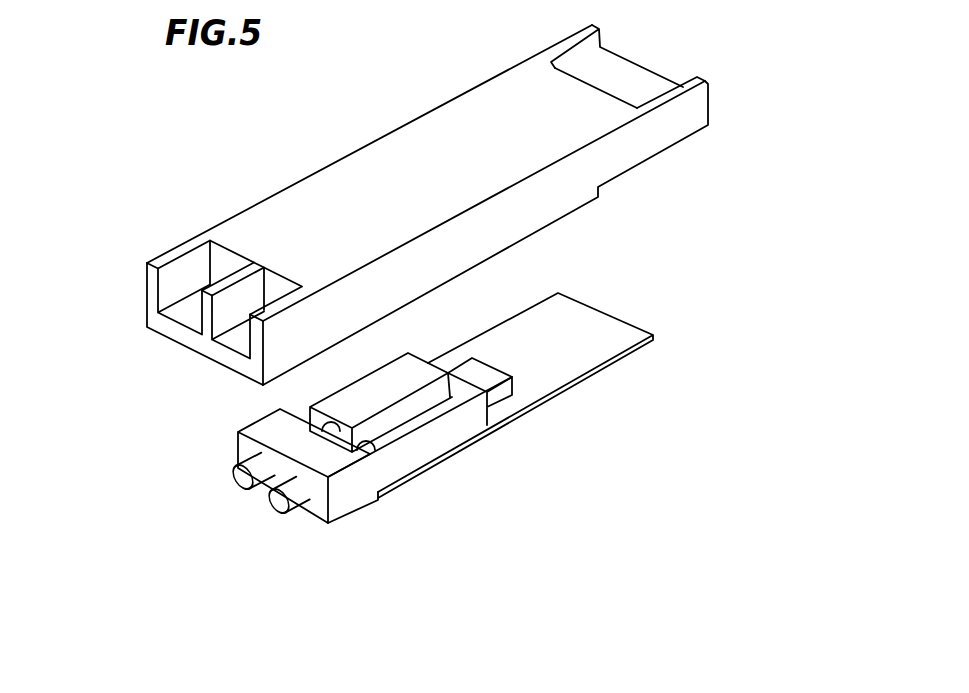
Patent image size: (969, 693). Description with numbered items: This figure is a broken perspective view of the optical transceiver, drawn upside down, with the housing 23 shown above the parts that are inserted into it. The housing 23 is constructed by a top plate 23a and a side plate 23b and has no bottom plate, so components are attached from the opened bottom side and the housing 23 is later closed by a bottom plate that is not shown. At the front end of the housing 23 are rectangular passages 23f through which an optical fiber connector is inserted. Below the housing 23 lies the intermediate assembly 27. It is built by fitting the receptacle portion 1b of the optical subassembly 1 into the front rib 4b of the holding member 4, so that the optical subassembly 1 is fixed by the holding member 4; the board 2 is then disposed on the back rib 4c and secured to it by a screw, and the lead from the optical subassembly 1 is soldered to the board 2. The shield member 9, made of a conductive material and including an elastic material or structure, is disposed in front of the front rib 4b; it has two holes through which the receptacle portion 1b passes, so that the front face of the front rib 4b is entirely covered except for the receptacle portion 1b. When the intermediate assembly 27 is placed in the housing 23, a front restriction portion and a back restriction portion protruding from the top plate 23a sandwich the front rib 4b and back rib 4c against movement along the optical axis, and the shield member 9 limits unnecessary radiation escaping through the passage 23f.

The housing 23 is at (371, 205).
The top plate 23a is at (378, 163).
The side plate 23b is at (578, 196).
The rectangular passage 23f is at (200, 278).
The intermediate assembly 27 is at (444, 451).
The shield member 9 is at (236, 441).
The optical subassembly 1 is at (368, 457).
The receptacle portion 1b is at (274, 503).
The holding member 4 is at (430, 484).
The front rib 4b is at (368, 500).
The back rib 4c is at (478, 420).
The board 2 is at (590, 353).